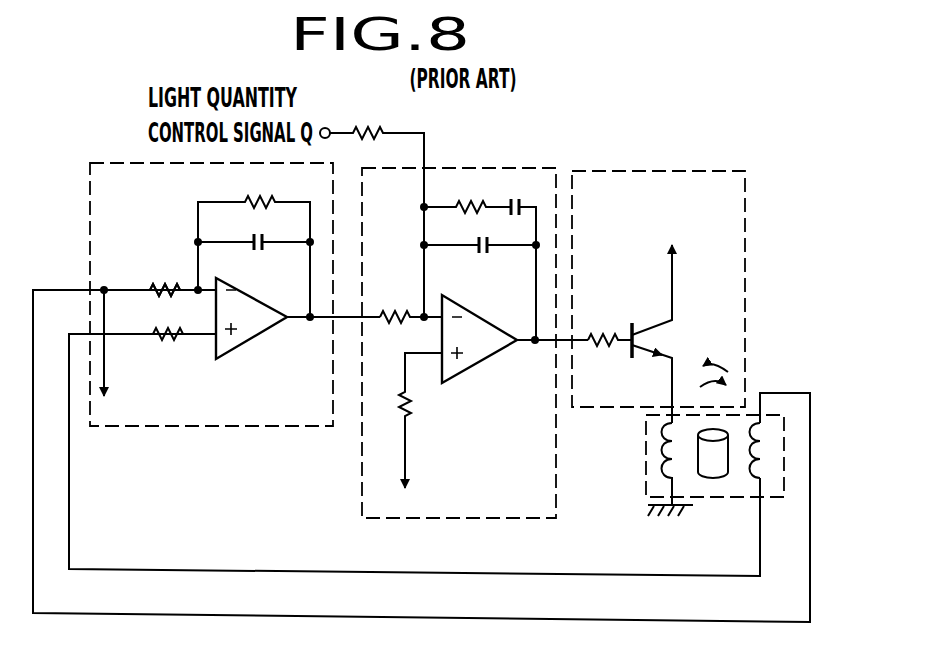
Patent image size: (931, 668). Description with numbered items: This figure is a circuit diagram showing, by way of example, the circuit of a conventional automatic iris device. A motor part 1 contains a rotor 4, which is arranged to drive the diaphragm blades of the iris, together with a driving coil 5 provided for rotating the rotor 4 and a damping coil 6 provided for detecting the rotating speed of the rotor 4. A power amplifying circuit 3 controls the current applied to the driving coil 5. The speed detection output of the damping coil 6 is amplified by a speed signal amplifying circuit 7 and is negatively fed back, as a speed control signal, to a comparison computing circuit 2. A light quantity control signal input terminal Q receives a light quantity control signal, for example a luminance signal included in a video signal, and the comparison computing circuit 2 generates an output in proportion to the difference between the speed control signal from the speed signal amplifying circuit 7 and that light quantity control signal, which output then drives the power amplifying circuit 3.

The motor part 1 is at (707, 487).
The comparison computing circuit 2 is at (360, 478).
The power amplifying circuit 3 is at (714, 170).
The rotor 4 is at (715, 479).
The driving coil 5 is at (660, 456).
The damping coil 6 is at (766, 460).
The speed signal amplifying circuit 7 is at (116, 162).